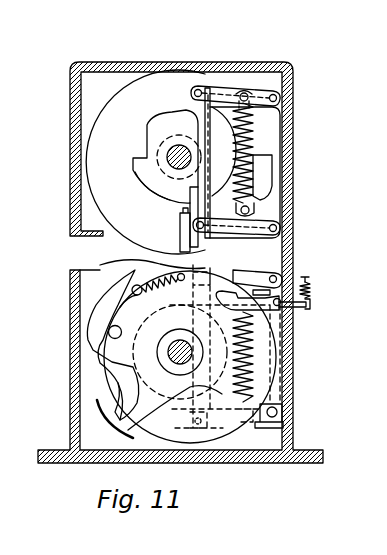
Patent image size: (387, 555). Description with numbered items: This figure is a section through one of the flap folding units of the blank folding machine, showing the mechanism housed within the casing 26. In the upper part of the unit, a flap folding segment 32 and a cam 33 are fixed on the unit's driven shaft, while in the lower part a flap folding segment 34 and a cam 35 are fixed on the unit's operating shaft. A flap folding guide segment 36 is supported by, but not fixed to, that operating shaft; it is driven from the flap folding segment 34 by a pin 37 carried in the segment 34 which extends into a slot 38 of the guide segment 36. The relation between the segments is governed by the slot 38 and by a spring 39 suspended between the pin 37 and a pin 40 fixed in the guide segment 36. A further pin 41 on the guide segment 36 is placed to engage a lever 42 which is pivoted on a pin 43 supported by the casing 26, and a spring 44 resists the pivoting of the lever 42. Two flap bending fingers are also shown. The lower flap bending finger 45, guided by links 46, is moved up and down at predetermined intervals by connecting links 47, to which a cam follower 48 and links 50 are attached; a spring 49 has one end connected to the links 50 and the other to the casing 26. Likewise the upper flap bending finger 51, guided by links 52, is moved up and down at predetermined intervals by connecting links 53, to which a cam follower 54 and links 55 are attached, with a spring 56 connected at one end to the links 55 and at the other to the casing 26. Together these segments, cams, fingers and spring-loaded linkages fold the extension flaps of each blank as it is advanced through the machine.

The casing 26 is at (70, 98).
The flap folding segment 32 is at (97, 155).
The cam 33 is at (151, 123).
The flap folding segment 34 is at (92, 318).
The cam 35 is at (87, 362).
The flap folding guide segment 36 is at (124, 392).
The pin 37 is at (100, 264).
The slot 38 is at (100, 291).
The spring 39 is at (160, 277).
The pin 40 is at (266, 277).
The pin 41 is at (108, 335).
The lever 42 is at (293, 309).
The pin 43 is at (283, 318).
The spring 44 is at (313, 288).
The lower flap bending finger 45 is at (237, 258).
The links 46 is at (283, 271).
The connecting links 47 is at (127, 440).
The cam follower 48 is at (222, 450).
The spring 49 is at (258, 375).
The links 50 is at (284, 418).
The upper flap bending finger 51 is at (180, 221).
The links 52 is at (270, 230).
The connecting links 53 is at (153, 187).
The cam follower 54 is at (192, 90).
The links 55 is at (224, 92).
The spring 56 is at (262, 132).